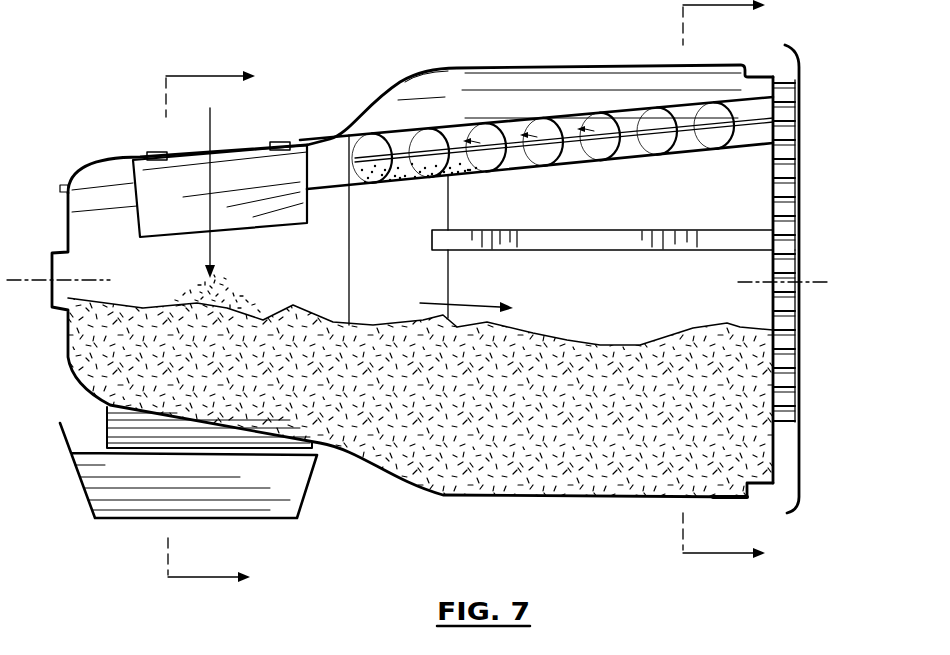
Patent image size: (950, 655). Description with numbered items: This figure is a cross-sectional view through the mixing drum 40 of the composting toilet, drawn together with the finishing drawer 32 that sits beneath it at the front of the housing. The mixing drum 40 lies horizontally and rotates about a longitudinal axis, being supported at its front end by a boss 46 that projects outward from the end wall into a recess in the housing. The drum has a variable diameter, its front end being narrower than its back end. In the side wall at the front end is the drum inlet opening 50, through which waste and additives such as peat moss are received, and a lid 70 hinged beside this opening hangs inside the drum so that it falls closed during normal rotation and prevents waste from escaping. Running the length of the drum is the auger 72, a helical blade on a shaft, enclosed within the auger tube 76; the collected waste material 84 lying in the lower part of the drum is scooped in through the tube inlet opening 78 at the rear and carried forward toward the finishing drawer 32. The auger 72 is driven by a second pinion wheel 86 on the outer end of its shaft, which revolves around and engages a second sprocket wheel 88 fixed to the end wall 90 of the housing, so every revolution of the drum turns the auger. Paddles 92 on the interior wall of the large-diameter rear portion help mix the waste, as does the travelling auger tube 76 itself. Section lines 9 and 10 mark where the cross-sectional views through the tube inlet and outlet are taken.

The boss 46 is at (52, 277).
The drum inlet opening 50 is at (147, 155).
The lid 70 is at (264, 227).
The section line 10- 10 is at (226, 328).
The mixing drum 40 is at (436, 66).
The section line 9- 9 is at (738, 284).
The auger tube 76 is at (377, 188).
The tube inlet opening 78 is at (667, 157).
The auger 72 is at (700, 143).
The paddle 92 is at (547, 230).
The collected material 84 is at (597, 343).
The second pinion wheel 86 is at (793, 104).
The second sprocket wheel 88 is at (784, 197).
The end wall 90 is at (800, 458).
The finishing drawer 32 is at (86, 497).